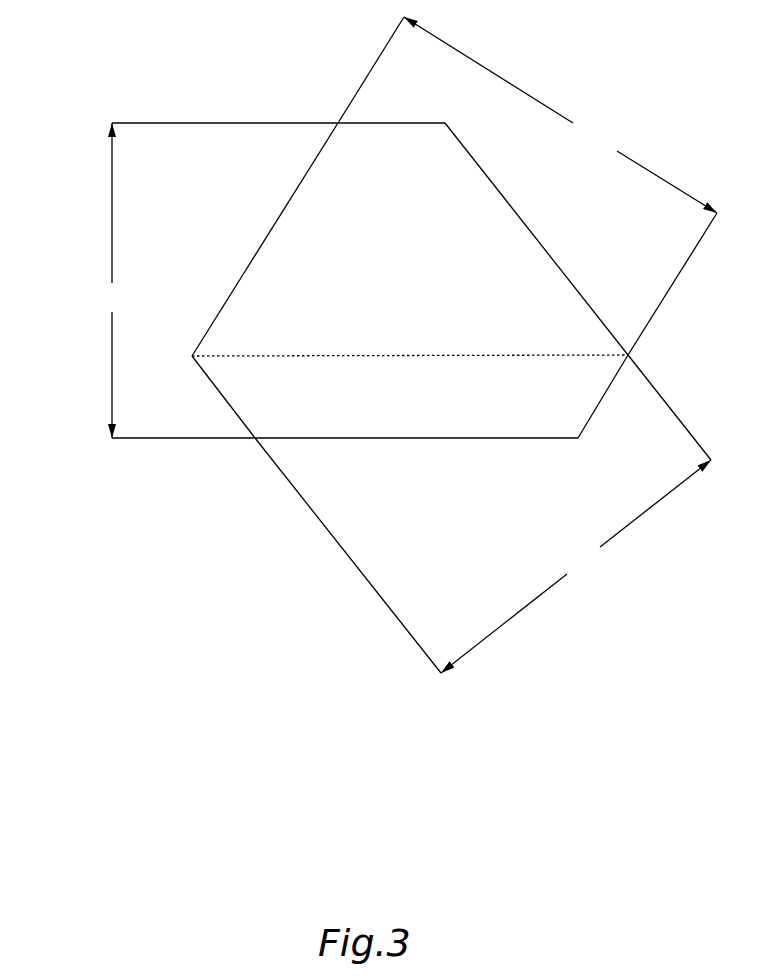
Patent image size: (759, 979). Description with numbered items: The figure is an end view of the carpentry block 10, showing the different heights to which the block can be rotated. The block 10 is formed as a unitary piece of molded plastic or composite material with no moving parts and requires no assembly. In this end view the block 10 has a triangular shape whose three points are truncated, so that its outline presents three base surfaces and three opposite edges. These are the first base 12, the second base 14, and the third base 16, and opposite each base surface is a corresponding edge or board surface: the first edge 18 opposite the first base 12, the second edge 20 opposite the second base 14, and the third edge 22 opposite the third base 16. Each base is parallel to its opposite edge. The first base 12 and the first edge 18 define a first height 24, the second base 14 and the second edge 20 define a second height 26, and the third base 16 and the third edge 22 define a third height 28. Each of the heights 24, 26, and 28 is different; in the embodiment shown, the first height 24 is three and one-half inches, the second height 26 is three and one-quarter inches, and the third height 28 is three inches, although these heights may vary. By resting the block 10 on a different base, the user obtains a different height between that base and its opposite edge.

The carpentry block 10 is at (405, 293).
The first base 12 is at (294, 190).
The second base 14 is at (536, 236).
The third base 16 is at (417, 439).
The first edge 18 is at (596, 412).
The second edge 20 is at (219, 396).
The third edge 22 is at (404, 119).
The first height 24 is at (502, 77).
The second height 26 is at (528, 607).
The third height 28 is at (112, 215).